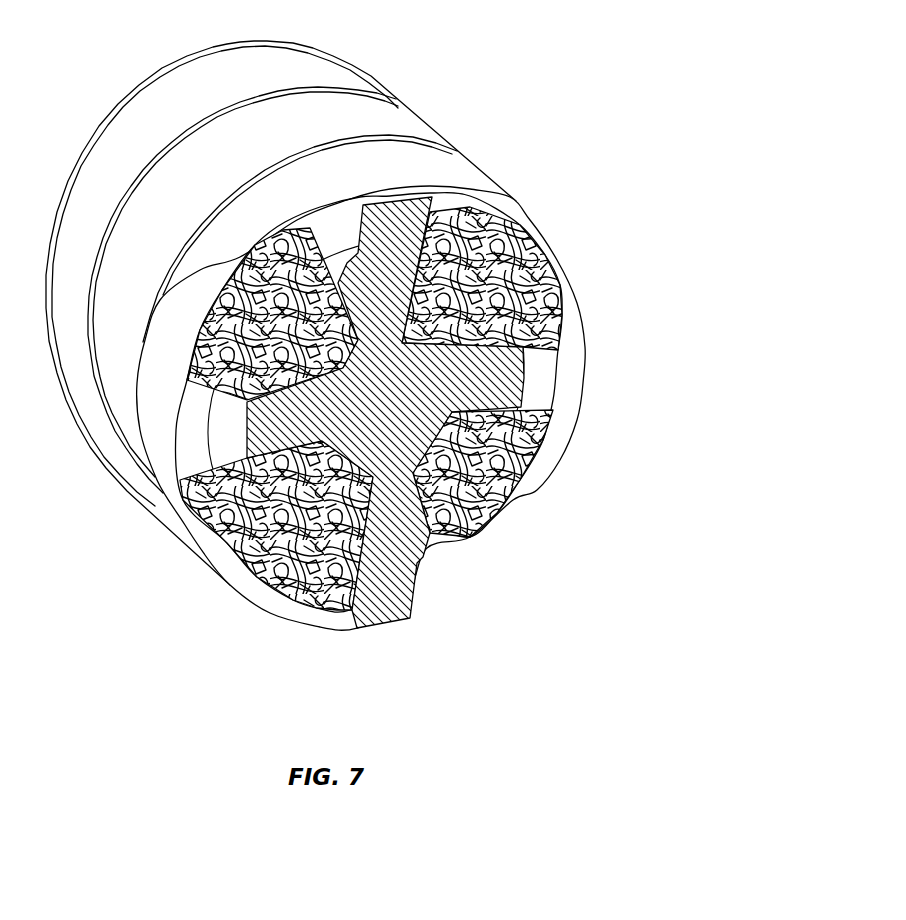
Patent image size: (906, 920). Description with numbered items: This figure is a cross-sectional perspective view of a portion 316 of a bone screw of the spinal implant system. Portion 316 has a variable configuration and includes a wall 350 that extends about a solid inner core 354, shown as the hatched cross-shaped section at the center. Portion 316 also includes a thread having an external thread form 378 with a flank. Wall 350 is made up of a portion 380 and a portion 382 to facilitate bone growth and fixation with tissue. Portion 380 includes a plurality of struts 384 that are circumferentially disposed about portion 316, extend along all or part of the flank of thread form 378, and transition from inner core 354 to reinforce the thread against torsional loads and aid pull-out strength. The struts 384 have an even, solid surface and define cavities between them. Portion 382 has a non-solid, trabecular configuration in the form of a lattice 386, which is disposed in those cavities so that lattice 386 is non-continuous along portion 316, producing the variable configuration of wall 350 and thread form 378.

The portion 316 is at (537, 72).
The wall 350 is at (210, 597).
The solid inner core 354 is at (410, 433).
The external thread form 378 is at (570, 300).
The portion 380 is at (560, 391).
The portion 382 is at (510, 243).
The struts 384 is at (563, 367).
The lattice 386 is at (432, 528).